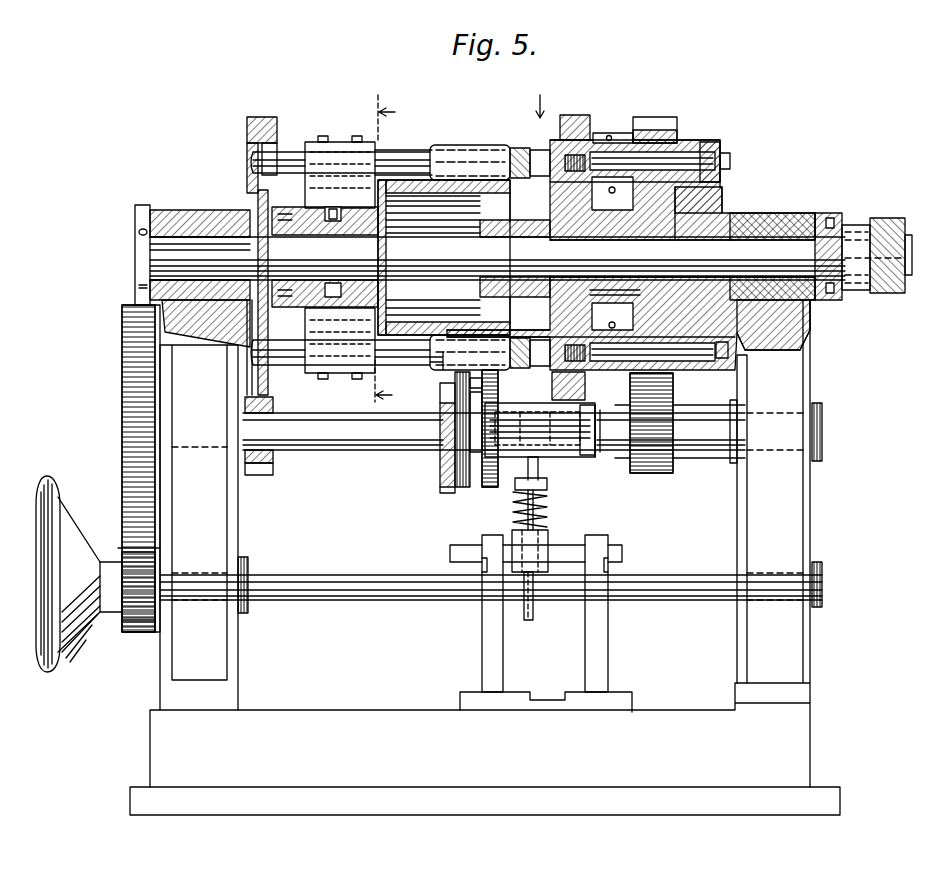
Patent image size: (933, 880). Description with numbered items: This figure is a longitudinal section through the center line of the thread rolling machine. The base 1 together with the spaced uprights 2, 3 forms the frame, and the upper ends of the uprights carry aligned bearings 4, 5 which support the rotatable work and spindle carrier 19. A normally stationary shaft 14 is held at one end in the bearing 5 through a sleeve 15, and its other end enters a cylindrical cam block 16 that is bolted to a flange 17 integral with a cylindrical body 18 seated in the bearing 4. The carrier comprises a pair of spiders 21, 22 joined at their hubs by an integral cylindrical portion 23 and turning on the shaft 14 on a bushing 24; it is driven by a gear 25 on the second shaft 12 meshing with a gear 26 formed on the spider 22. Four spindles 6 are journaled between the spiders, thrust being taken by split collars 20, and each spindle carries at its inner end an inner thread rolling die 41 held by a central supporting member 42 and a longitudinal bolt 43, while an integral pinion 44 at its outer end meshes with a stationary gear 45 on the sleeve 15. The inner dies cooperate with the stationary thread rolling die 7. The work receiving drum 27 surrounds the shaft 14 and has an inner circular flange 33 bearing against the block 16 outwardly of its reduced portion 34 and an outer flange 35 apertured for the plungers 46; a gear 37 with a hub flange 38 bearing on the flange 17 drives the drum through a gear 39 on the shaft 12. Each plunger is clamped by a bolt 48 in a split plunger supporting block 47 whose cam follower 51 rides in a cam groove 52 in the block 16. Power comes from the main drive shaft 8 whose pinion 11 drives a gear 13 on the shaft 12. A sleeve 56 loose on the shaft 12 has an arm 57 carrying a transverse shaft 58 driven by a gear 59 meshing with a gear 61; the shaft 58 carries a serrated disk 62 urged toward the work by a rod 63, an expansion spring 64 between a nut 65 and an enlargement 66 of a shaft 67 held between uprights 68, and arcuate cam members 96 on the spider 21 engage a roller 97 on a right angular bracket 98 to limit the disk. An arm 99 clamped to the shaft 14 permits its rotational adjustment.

The base 1 is at (806, 746).
The upright 2 is at (228, 522).
The upright 3 is at (742, 504).
The bearing 4 is at (200, 211).
The bearing 5 is at (804, 214).
The spindle 6 is at (640, 112).
The stationary thread rolling die 7 is at (438, 255).
The main drive shaft 8 is at (356, 592).
The pinion gear 11 is at (141, 622).
The second shaft 12 is at (350, 451).
The gear 13 is at (121, 482).
The shaft 14 is at (812, 304).
The sleeve 15 is at (764, 234).
The cylindrical cam block 16 is at (440, 298).
The flange 17 is at (256, 248).
The cylindrical body 18 is at (180, 232).
The work and spindle carrier 19 is at (537, 98).
The split collar 20 is at (610, 133).
The spider 21 is at (592, 140).
The spider 22 is at (722, 144).
The cylindrical portion 23 is at (612, 292).
The bushing 24 is at (642, 258).
The gear 25 is at (656, 457).
The gear 26 is at (668, 120).
The work receiving drum 27 is at (432, 360).
The circular flange 33 is at (430, 322).
The reduced portion 34 is at (372, 212).
The circular flange 35 is at (398, 150).
The gear 37 is at (263, 118).
The circular flange 38 is at (256, 205).
The gear 39 is at (276, 462).
The inner thread rolling die 41 is at (536, 146).
The central supporting member 42 is at (508, 152).
The bolt 43 is at (731, 159).
The pinion 44 is at (706, 142).
The stationary gear 45 is at (706, 206).
The plunger 46 is at (288, 152).
The plunger supporting block 47 is at (338, 141).
The bolt 48 is at (322, 136).
The cam follower 51 is at (360, 286).
The cam groove 52 is at (340, 292).
The sleeve 56 is at (590, 452).
The arm 57 is at (548, 434).
The transverse shaft 58 is at (544, 418).
The gear 59 is at (456, 380).
The gear 61 is at (441, 468).
The disk 62 is at (484, 488).
The rod 63 is at (540, 466).
The expansion spring 64 is at (546, 505).
The nut 65 is at (518, 489).
The enlargement 66 is at (542, 540).
The shaft 67 is at (582, 544).
The upright 68 is at (488, 633).
The arcuate cam member 96 is at (572, 115).
The roller 97 is at (478, 408).
The right angular bracket 98 is at (476, 390).
The arm 99 is at (886, 232).